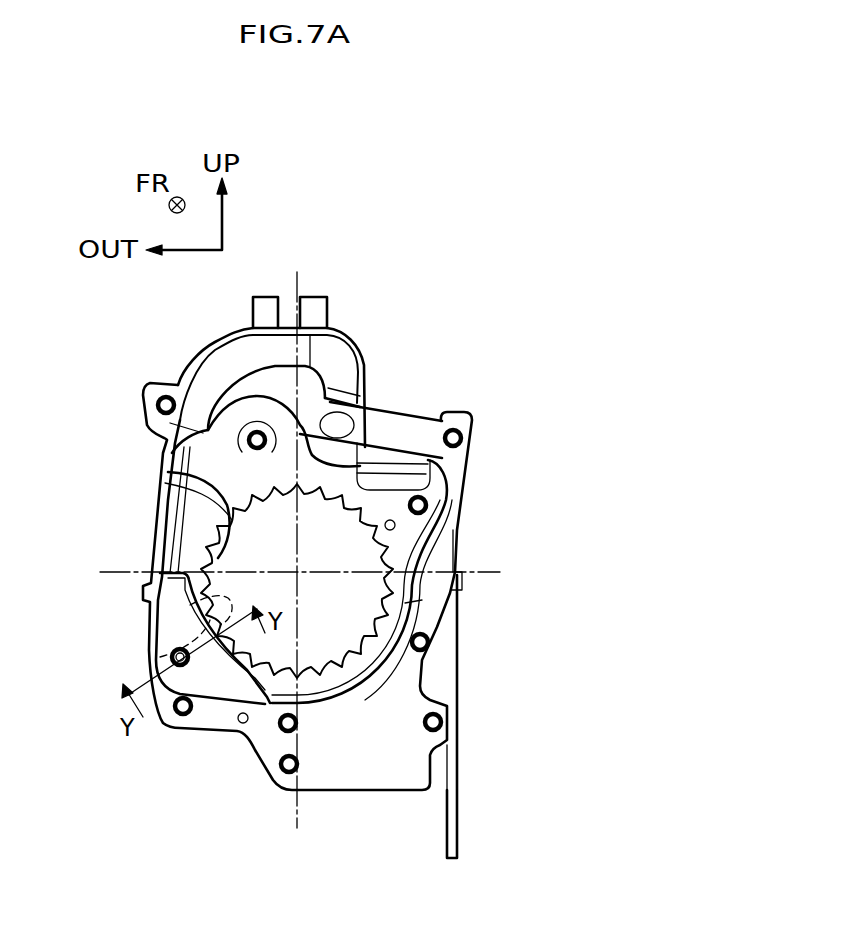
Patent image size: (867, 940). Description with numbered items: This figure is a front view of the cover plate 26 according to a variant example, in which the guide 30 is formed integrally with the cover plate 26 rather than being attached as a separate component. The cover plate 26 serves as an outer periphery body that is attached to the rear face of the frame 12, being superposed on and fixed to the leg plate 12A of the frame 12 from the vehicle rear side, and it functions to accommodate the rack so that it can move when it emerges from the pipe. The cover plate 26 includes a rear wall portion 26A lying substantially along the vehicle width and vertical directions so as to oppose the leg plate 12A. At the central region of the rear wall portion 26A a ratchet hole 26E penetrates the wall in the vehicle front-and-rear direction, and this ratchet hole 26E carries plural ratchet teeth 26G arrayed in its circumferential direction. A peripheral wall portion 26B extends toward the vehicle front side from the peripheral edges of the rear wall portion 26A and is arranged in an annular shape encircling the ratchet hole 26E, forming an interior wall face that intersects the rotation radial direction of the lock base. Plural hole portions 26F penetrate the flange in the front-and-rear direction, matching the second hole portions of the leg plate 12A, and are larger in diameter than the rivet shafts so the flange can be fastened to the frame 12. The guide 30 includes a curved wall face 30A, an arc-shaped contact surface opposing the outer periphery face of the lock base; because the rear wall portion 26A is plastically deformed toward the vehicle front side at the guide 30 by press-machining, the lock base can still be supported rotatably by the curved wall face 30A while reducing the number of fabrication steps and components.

The frame 12 is at (458, 766).
The leg plate 12A is at (443, 760).
The cover plate 26 is at (411, 414).
The rear wall portion 26A is at (243, 477).
The peripheral wall portion 26B is at (413, 623).
The ratchet hole 26E is at (238, 452).
The hole portions 26F is at (177, 657).
The ratchet teeth 26G is at (222, 557).
The guide 30 is at (175, 640).
The curved wall face 30A is at (190, 605).